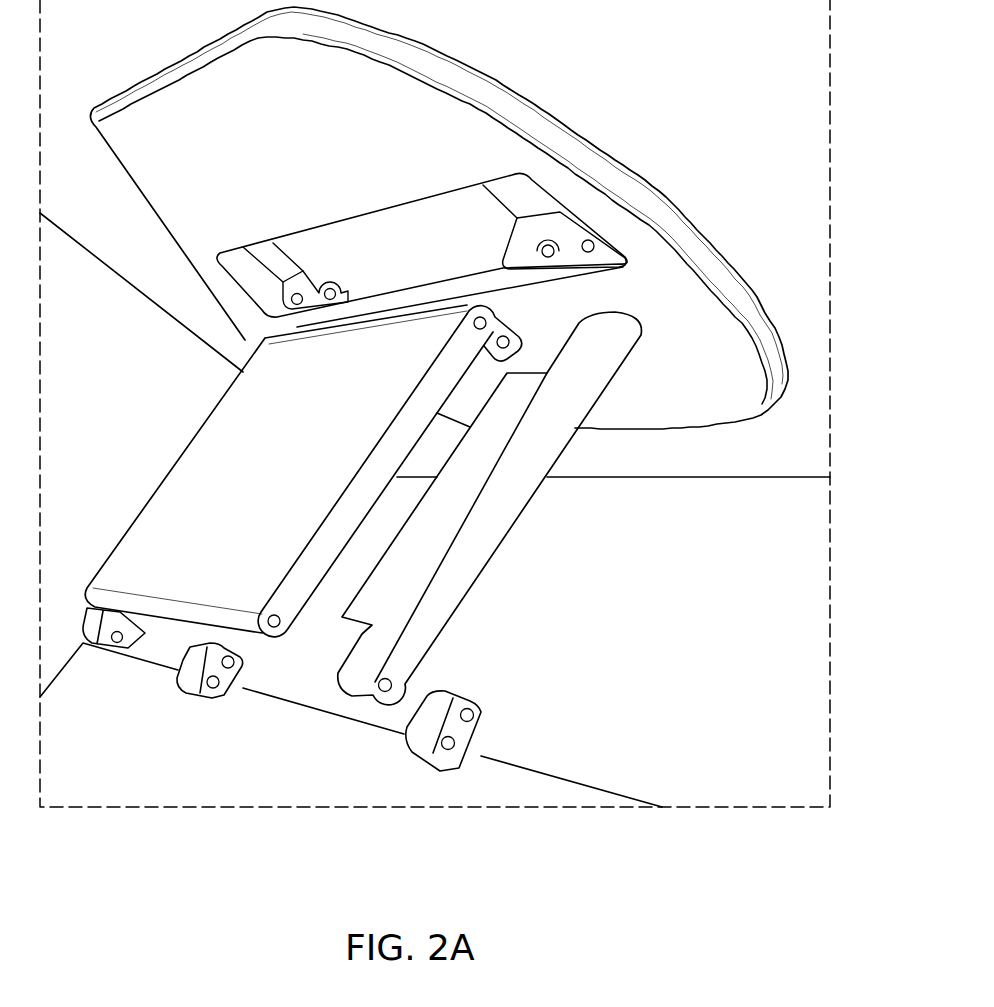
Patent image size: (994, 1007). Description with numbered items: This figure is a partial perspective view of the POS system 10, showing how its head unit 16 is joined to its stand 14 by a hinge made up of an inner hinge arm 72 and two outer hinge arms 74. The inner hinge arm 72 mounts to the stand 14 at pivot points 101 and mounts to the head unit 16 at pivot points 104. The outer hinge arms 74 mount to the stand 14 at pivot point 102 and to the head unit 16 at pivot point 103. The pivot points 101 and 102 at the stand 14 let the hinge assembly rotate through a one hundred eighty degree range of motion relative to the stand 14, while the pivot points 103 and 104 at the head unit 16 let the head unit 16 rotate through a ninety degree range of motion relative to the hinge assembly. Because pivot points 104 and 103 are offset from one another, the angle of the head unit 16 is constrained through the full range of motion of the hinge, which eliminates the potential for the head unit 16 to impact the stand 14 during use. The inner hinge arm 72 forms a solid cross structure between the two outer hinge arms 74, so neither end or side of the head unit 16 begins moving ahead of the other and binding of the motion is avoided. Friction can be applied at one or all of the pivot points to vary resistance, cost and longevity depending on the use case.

The POS system 10 is at (622, 132).
The stand 14 is at (702, 703).
The head unit 16 is at (193, 173).
The inner hinge arm 72 is at (267, 467).
The outer hinge arms 74 is at (463, 503).
The pivot points 101 is at (278, 618).
The pivot point 102 is at (124, 638).
The pivot point 103 is at (287, 312).
The pivot points 104 is at (343, 288).